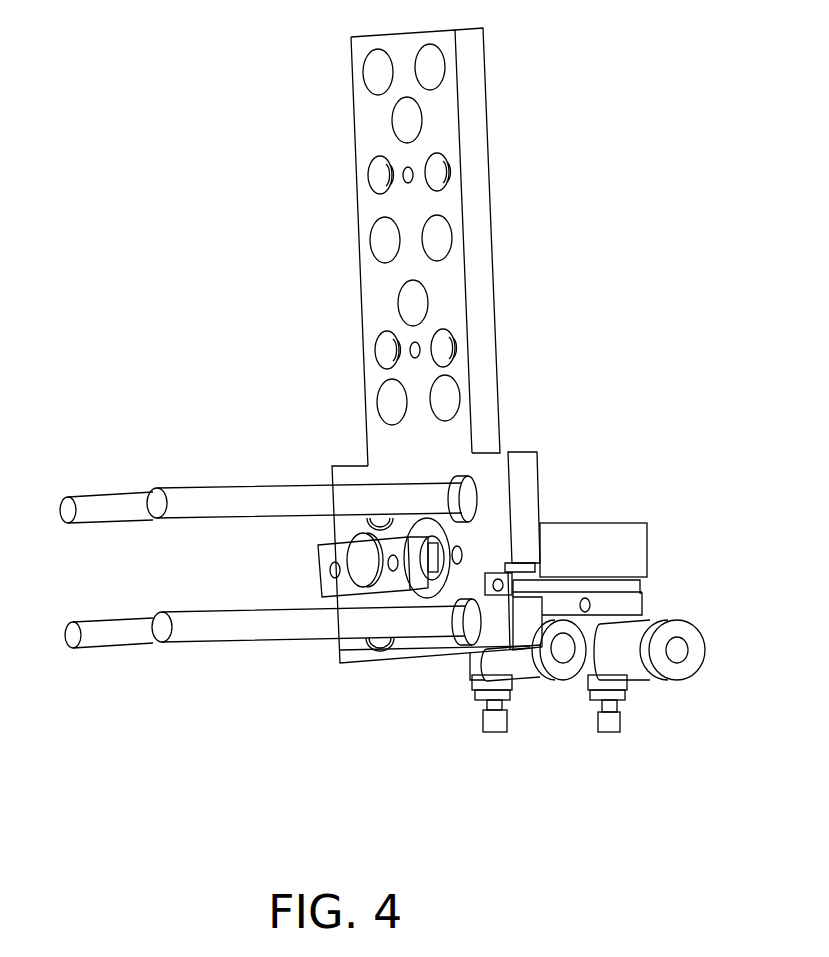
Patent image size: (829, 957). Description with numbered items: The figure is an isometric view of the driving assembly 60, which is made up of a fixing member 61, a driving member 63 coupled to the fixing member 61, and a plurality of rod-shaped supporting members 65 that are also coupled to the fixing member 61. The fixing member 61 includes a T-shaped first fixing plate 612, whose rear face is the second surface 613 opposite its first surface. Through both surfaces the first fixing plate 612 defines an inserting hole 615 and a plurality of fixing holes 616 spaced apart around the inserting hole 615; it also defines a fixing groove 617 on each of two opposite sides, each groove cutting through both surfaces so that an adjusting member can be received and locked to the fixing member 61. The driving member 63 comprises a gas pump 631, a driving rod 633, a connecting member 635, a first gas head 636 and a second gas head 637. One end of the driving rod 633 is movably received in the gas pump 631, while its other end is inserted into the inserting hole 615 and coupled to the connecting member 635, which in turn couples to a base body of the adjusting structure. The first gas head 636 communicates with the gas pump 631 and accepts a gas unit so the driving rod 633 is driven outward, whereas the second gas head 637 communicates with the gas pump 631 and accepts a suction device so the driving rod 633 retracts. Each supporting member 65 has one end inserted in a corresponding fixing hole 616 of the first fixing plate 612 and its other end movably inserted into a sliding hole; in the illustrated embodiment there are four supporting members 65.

The driving assembly 60 is at (233, 50).
The fixing member 61 is at (355, 145).
The first fixing plate 612 is at (403, 448).
The second surface 613 is at (495, 315).
The inserting hole 615 is at (430, 598).
The fixing holes 616 is at (473, 478).
The fixing groove 617 is at (498, 590).
The driving member 63 is at (596, 616).
The gas pump 631 is at (637, 545).
The driving rod 633 is at (362, 567).
The connecting member 635 is at (325, 557).
The first gas head 636 is at (680, 670).
The second gas head 637 is at (563, 672).
The supporting member 65 is at (118, 502).